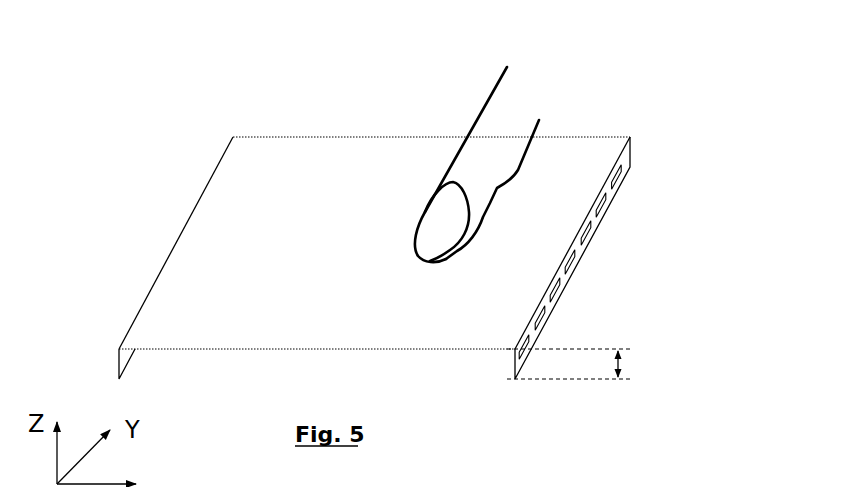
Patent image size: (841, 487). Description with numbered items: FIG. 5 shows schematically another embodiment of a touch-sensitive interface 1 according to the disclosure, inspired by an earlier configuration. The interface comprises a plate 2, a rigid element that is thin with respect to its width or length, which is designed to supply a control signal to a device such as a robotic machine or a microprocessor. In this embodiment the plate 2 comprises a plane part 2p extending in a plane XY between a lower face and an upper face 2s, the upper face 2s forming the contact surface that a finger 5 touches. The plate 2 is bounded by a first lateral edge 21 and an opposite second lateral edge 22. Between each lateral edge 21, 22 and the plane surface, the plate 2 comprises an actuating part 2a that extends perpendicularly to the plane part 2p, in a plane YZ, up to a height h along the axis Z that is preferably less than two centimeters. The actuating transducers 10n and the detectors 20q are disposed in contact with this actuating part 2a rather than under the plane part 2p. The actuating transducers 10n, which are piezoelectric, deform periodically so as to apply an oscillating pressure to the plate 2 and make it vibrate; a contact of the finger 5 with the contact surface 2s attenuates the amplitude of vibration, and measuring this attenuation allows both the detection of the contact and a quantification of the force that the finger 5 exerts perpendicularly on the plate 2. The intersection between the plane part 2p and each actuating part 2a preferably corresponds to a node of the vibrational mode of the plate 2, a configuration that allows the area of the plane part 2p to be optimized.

The touch-sensitive interface 1 is at (226, 57).
The plate 2 is at (395, 150).
The plane part 2p is at (311, 185).
The upper face 2s is at (272, 250).
The actuating part 2a is at (624, 164).
The first lateral edge 21 is at (128, 374).
The second lateral edge 22 is at (612, 214).
The finger 5 is at (495, 151).
The actuating transducer 10n is at (550, 315).
The detector 20q is at (529, 351).
The plate thickness h is at (575, 364).